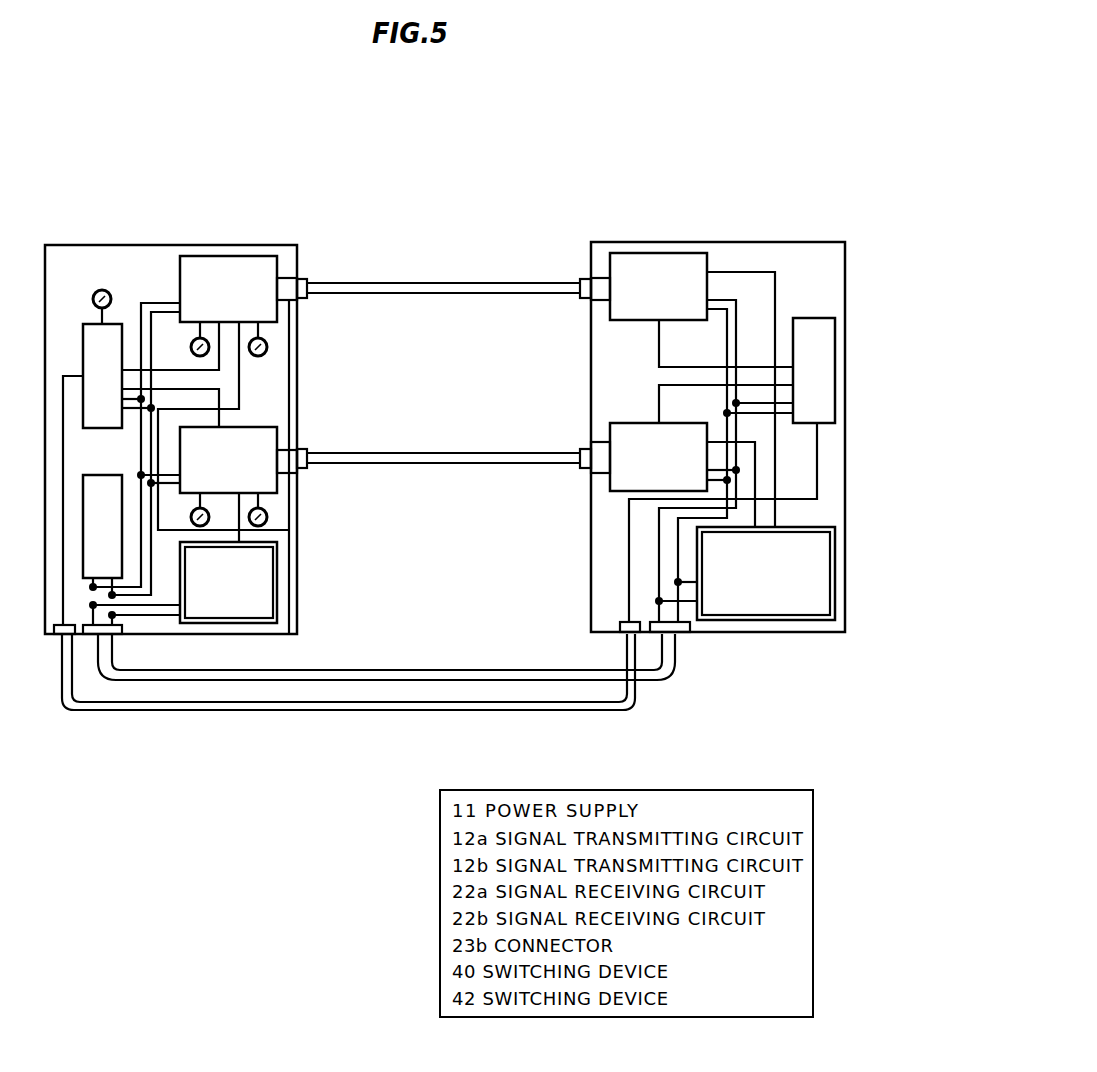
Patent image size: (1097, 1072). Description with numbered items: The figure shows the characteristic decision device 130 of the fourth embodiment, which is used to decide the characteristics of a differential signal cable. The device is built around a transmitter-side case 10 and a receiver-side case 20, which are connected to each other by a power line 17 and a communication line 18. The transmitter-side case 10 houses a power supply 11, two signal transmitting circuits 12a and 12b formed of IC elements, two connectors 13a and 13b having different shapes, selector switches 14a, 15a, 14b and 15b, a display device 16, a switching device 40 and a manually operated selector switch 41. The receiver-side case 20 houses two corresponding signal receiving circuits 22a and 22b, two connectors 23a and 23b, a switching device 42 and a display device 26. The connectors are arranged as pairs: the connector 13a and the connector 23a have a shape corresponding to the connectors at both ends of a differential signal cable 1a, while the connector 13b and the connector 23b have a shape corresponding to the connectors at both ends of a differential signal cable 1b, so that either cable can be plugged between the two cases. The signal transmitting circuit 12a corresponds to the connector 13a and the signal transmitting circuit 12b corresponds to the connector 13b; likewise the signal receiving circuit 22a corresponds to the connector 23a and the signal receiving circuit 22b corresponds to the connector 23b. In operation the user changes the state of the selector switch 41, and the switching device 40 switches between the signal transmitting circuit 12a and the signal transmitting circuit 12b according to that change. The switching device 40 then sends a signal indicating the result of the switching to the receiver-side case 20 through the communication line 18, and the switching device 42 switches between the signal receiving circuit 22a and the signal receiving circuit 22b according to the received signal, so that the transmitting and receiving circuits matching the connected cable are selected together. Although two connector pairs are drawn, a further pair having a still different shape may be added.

The characteristic decision device 130 is at (677, 119).
The transmitter-side case 10 is at (155, 245).
The power supply 11 is at (100, 475).
The signal transmitting circuit 12a is at (233, 256).
The signal transmitting circuit 12b is at (267, 427).
The connector 13a is at (288, 278).
The connector 13b is at (292, 447).
The selector switch 14a is at (372, 348).
The selector switch 14b is at (372, 518).
The selector switch 15a is at (267, 346).
The selector switch 15b is at (267, 516).
The display device 16 is at (277, 584).
The power line 17 is at (378, 670).
The communication line 18 is at (332, 710).
The differential signal cable 1a is at (440, 283).
The differential signal cable 1b is at (470, 453).
The receiver-side case 20 is at (795, 242).
The signal receiving circuit 22a is at (660, 253).
The signal receiving circuit 22b is at (635, 423).
The connector 23a is at (594, 278).
The connector 23b is at (591, 444).
The display device 26 is at (717, 632).
The switching device 40 is at (115, 324).
The selector switch 41 is at (102, 290).
The switching device 42 is at (813, 318).